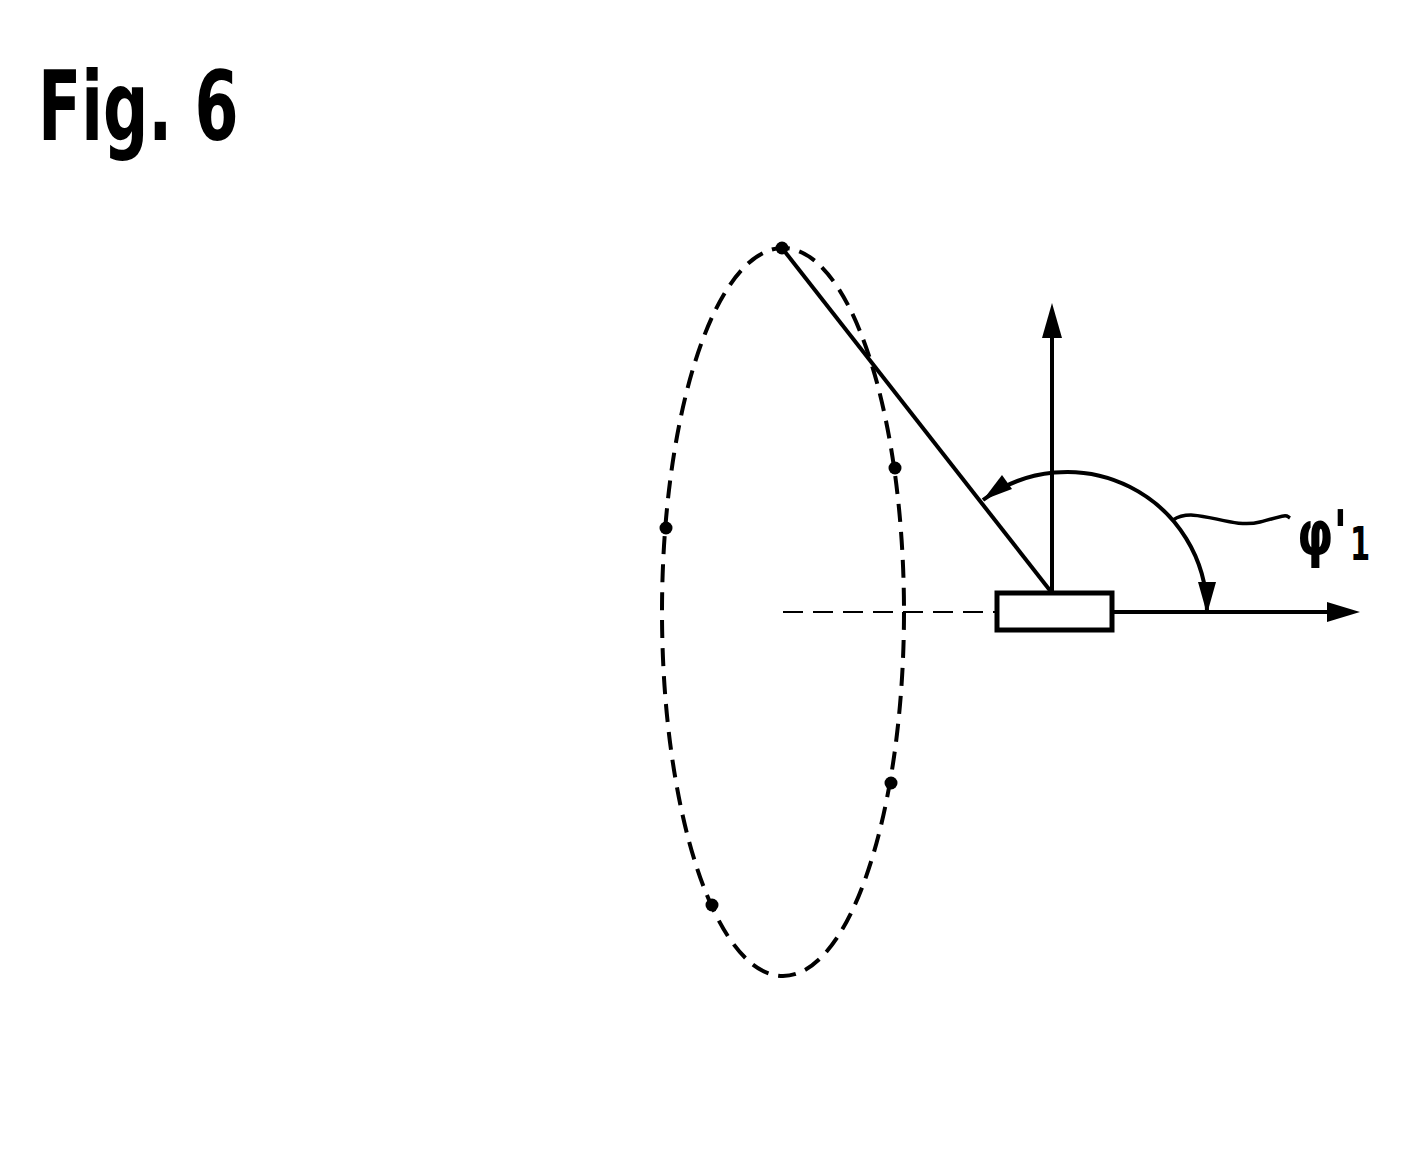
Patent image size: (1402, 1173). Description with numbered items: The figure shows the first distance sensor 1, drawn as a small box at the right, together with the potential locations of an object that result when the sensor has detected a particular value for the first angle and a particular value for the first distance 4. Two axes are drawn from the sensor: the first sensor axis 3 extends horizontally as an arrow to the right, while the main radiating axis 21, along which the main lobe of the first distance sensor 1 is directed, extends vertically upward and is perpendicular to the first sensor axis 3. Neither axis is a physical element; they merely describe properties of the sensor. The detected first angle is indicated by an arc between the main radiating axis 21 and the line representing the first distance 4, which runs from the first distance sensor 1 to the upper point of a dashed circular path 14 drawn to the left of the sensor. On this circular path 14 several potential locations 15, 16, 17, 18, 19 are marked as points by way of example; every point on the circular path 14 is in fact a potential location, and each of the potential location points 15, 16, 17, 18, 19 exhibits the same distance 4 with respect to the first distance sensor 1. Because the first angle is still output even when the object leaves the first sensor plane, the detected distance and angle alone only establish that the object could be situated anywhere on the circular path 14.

The first distance sensor 1 is at (1065, 632).
The first sensor axis 3 is at (1275, 614).
The first distance 4 is at (932, 440).
The circular path 14 is at (677, 440).
The potential location 15 is at (782, 248).
The potential location 16 is at (666, 528).
The potential location 17 is at (712, 905).
The potential location 18 is at (891, 783).
The potential location 19 is at (895, 468).
The main radiating axis 21 is at (1052, 392).